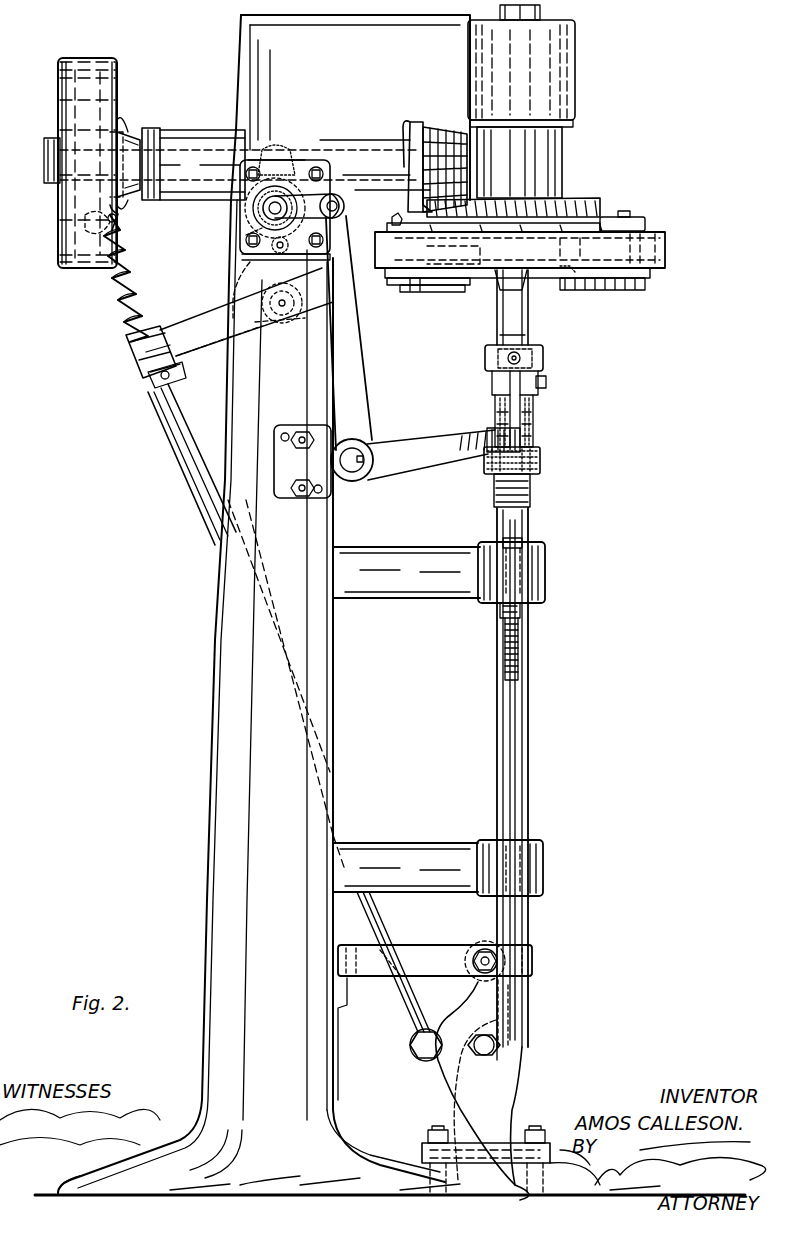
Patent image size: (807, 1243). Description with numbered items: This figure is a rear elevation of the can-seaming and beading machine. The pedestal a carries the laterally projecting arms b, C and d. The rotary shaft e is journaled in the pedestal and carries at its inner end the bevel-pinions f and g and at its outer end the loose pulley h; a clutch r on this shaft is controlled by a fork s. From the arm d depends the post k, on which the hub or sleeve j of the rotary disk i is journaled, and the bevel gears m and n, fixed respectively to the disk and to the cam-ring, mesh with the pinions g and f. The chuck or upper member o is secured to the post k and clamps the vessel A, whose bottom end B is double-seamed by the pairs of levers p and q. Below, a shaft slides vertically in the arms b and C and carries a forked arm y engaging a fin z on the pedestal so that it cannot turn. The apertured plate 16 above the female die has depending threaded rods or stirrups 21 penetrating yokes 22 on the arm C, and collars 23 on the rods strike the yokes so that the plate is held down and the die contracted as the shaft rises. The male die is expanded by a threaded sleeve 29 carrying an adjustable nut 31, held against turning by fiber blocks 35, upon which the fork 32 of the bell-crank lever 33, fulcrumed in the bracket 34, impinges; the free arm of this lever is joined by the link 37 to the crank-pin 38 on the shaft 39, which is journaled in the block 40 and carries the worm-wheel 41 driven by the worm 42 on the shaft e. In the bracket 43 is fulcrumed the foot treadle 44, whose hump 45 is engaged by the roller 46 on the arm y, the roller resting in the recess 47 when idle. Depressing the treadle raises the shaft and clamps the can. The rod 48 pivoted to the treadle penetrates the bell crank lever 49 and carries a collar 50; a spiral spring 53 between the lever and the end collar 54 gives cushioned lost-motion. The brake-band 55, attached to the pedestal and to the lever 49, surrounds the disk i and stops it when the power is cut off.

The pedestal a is at (214, 766).
The laterally projecting arm b is at (420, 852).
The laterally projecting arm C is at (410, 558).
The laterally projecting arm d is at (408, 30).
The rotary shaft e is at (48, 165).
The bevel-pinion f is at (423, 125).
The bevel-pinion g is at (447, 124).
The loose pulley h is at (65, 268).
The rotary disk i is at (652, 275).
The hub or sleeve j is at (560, 168).
The post k is at (522, 760).
The bevel gear m is at (578, 212).
The bevel gear n is at (612, 218).
The chuck or upper member o is at (498, 276).
The lever p is at (384, 278).
The lever q is at (432, 280).
The clutch r is at (128, 148).
The fork s is at (156, 143).
The forked arm y is at (420, 950).
The fin z is at (346, 1010).
The vessel A is at (528, 318).
The end B is at (505, 302).
The apertured plate 16 is at (540, 355).
The threaded rods or stirrups 21 is at (536, 490).
The yokes 22 is at (494, 608).
The collars 23 is at (524, 630).
The sleeve 29 is at (528, 440).
The adjustable collar or nut 31 is at (540, 462).
The fork 32 is at (485, 440).
The bell-crank lever 33 is at (402, 450).
The bracket 34 is at (345, 482).
The fiber blocks 35 is at (302, 461).
The link 37 is at (330, 192).
The crank-pin 38 is at (248, 210).
The shaft 39 is at (275, 248).
The block 40 is at (250, 256).
The worm-wheel 41 is at (248, 236).
The worm 42 is at (290, 153).
The bracket 43 is at (514, 1098).
The lever or foot treadle 44 is at (500, 1072).
The hump 45 is at (478, 985).
The roller 46 is at (486, 942).
The recess 47 is at (520, 1012).
The rod 48 is at (200, 478).
The bell crank lever 49 is at (216, 345).
The collar 50 is at (158, 388).
The spiral spring 53 is at (140, 283).
The collar 54 is at (118, 218).
The brake-band 55 is at (610, 280).